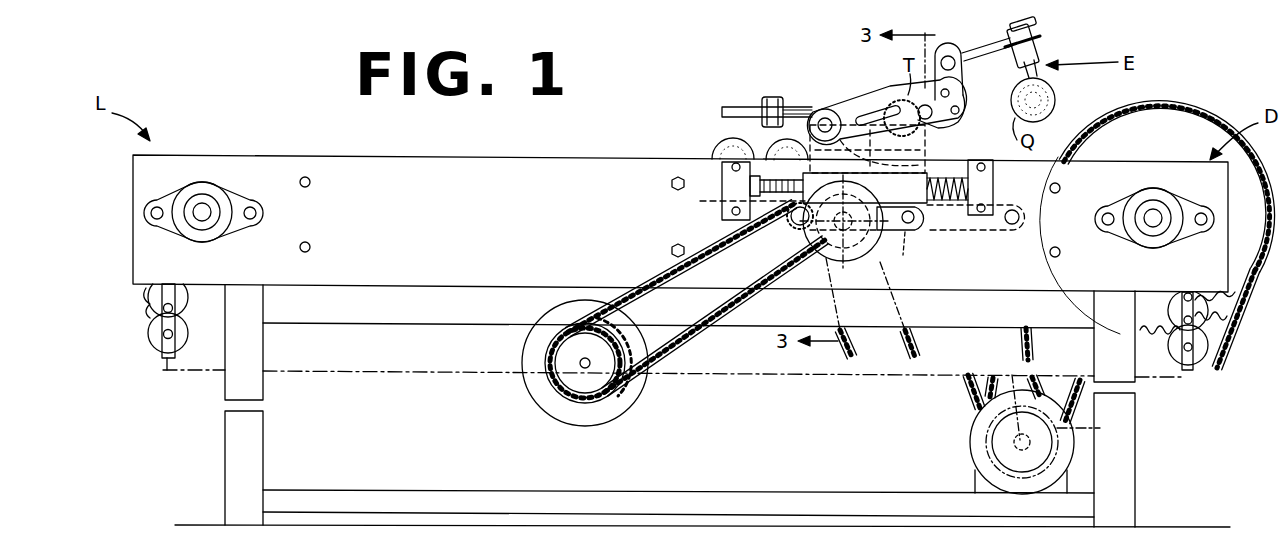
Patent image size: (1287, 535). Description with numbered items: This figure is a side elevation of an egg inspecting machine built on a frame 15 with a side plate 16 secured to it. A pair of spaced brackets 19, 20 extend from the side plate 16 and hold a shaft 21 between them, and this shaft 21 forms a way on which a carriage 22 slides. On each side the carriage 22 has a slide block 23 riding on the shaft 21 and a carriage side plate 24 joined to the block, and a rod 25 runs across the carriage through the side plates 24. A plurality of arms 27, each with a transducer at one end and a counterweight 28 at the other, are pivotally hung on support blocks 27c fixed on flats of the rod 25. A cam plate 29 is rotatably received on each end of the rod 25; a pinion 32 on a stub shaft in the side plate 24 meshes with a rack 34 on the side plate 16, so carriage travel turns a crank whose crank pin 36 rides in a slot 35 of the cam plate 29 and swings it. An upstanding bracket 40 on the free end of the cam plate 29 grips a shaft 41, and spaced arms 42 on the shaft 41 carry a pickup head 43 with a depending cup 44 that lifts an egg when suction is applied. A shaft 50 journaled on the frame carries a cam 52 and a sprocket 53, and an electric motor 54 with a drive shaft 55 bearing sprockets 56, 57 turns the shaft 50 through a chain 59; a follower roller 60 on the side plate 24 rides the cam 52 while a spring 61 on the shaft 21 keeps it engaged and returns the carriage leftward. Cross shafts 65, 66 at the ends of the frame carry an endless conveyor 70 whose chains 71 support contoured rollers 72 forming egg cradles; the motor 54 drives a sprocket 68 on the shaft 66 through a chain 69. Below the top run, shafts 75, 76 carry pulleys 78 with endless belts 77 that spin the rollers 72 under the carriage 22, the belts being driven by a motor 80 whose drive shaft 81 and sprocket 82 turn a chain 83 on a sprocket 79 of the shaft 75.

The frame 15 is at (220, 393).
The side plate 16 is at (313, 158).
The bracket 19 is at (722, 182).
The bracket 20 is at (994, 180).
The shaft 21 is at (722, 200).
The carriage 22 is at (826, 104).
The slide block 23 is at (930, 162).
The side plate 24 is at (920, 135).
The rod 25 is at (800, 178).
The arm 27 is at (722, 112).
The support block 27c is at (815, 103).
The counterweight 28 is at (760, 104).
The cam plate 29 is at (883, 95).
The pinion 32 is at (950, 117).
The rack 34 is at (865, 188).
The slot 35 is at (901, 100).
The crank pin 36 is at (952, 103).
The upstanding bracket 40 is at (968, 56).
The shaft 41 is at (948, 55).
The arm 42 is at (1040, 55).
The pickup head 43 is at (1040, 30).
The cup 44 is at (1050, 84).
The shaft 50 is at (856, 256).
The cam 52 is at (876, 268).
The sprocket 53 is at (822, 255).
The electric motor 54 is at (974, 456).
The drive shaft 55 is at (1012, 443).
The sprocket 56 is at (984, 424).
The sprocket 57 is at (1065, 427).
The chain 59 is at (908, 350).
The follower roller 60 is at (906, 243).
The spring 61 is at (970, 199).
The cross shaft 65 is at (208, 208).
The cross shaft 66 is at (1160, 213).
The sprocket 68 is at (1195, 114).
The chain 69 is at (1232, 352).
The endless conveyor 70 is at (158, 352).
The endless chain 71 is at (172, 312).
The roller 72 is at (152, 292).
The shaft 75 is at (795, 243).
The shaft 76 is at (1018, 218).
The endless belt 77 is at (955, 240).
The pulley 78 is at (1011, 232).
The sprocket 79 is at (788, 220).
The motor 80 is at (524, 348).
The drive shaft 81 is at (585, 356).
The sprocket 82 is at (570, 376).
The chain 83 is at (666, 272).